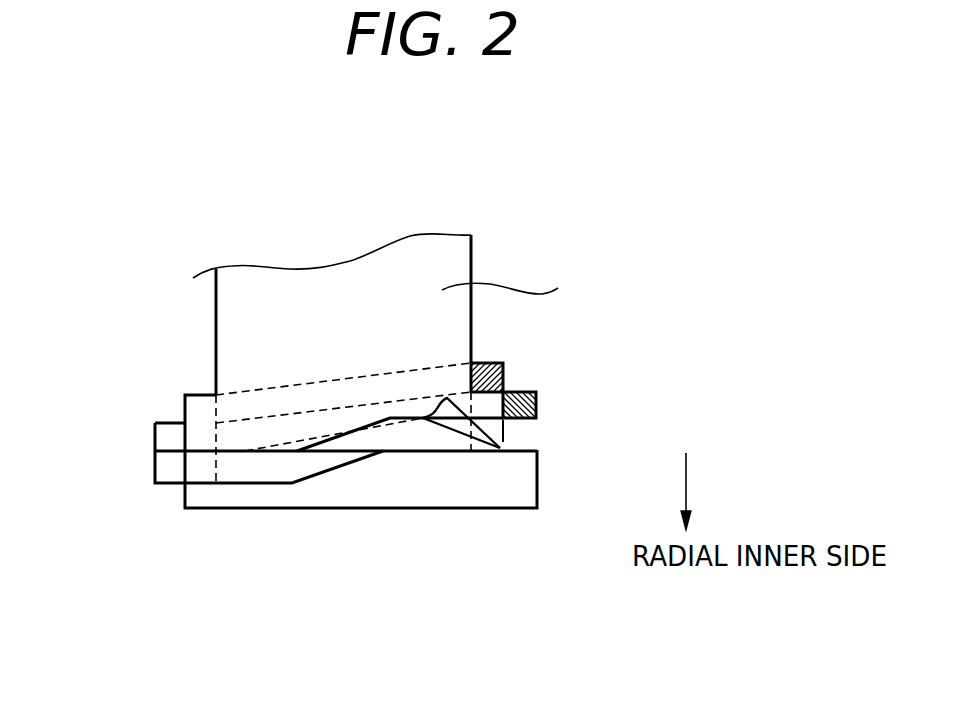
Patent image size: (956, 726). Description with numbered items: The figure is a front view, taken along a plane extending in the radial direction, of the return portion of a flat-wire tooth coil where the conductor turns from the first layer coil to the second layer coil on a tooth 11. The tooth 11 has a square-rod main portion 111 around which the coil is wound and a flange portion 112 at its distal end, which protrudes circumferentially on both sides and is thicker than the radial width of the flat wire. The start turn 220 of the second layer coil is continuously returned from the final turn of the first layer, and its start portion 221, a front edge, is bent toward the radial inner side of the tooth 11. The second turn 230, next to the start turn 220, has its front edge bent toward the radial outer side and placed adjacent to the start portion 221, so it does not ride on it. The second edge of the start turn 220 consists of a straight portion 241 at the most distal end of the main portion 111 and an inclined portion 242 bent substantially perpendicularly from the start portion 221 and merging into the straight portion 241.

The tooth 11 is at (477, 246).
The main portion 111 is at (523, 288).
The flange portion 112 is at (511, 488).
The start turn 220 is at (264, 490).
The start portion 221 is at (388, 438).
The second turn 230 is at (518, 391).
The straight portion 241 is at (153, 438).
The inclined portion 242 is at (162, 467).